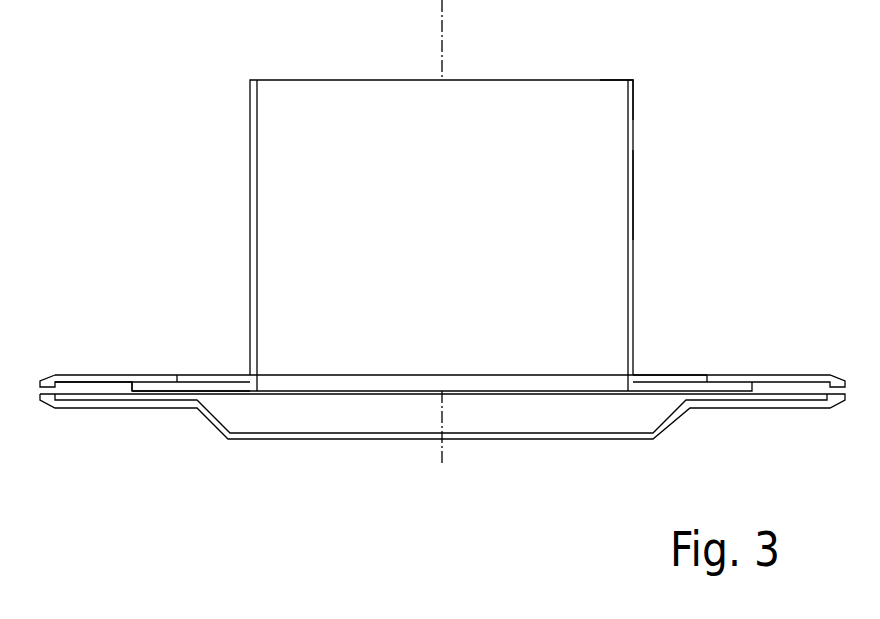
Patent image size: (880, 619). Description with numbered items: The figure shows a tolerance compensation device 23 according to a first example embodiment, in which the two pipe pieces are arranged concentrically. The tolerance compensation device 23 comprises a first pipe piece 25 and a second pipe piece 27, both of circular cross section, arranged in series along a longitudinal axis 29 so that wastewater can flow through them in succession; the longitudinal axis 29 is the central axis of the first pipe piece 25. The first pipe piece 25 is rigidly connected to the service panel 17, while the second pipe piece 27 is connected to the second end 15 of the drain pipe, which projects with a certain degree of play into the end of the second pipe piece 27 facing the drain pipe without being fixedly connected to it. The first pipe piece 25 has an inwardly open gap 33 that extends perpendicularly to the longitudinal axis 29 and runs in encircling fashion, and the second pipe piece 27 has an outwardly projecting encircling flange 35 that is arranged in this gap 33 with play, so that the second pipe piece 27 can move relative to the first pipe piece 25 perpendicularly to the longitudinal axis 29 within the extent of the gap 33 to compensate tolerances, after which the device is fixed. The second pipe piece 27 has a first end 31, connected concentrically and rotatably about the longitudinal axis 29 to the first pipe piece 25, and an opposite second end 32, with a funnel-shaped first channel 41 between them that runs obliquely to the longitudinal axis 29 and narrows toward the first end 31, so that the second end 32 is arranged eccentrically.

The second end of the drain pipe 15 is at (331, 37).
The service panel 17 is at (332, 492).
The tolerance compensation device 23 is at (725, 290).
The first pipe piece 25 is at (673, 418).
The second pipe piece 27 is at (633, 193).
The longitudinal axis 29 is at (442, 452).
The first end 31 is at (634, 378).
The second end 32 is at (633, 102).
The gap 33 is at (97, 393).
The flange 35 is at (195, 388).
The first channel 41 is at (393, 246).